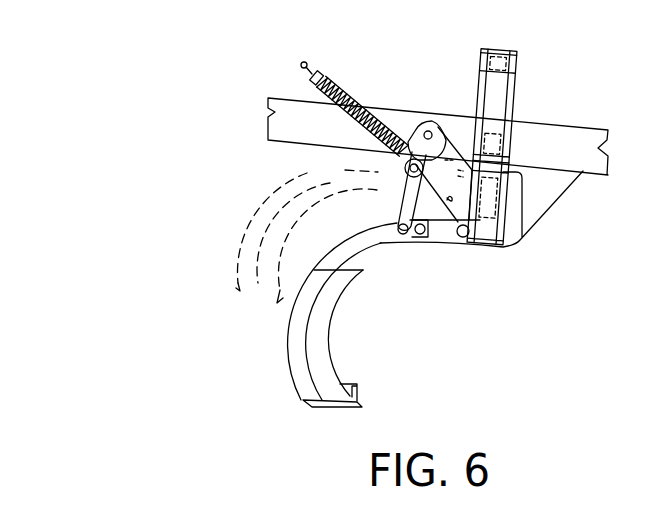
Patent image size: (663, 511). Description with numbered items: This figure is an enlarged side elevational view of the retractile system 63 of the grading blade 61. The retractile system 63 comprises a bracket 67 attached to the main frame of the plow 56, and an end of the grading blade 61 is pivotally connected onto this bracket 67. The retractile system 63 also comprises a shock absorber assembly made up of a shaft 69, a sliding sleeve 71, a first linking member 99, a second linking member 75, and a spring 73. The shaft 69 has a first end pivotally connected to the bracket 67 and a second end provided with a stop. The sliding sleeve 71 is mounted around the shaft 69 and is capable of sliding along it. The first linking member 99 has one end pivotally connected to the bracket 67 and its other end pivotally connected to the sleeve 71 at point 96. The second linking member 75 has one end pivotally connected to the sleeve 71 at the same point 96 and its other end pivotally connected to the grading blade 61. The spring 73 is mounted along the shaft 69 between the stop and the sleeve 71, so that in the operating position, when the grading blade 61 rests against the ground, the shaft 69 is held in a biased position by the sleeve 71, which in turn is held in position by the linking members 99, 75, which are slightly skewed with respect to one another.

The plow 56 is at (575, 140).
The grading blade 61 is at (318, 352).
The retractile system 63 is at (422, 78).
The bracket 67 is at (474, 238).
The shaft 69 is at (303, 62).
The sliding sleeve 71 is at (405, 174).
The spring 73 is at (355, 100).
The second linking member 75 is at (423, 240).
The pivot point 96 is at (436, 130).
The first linking member 99 is at (415, 142).